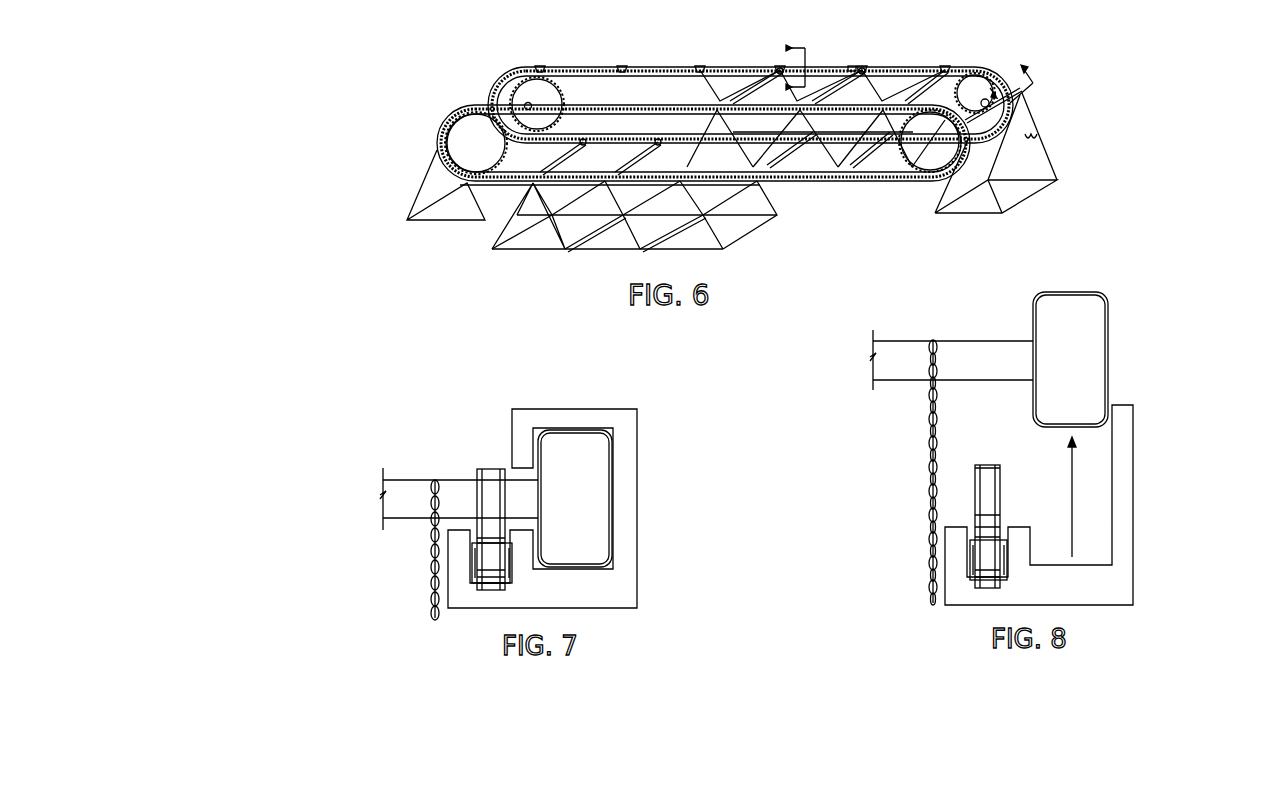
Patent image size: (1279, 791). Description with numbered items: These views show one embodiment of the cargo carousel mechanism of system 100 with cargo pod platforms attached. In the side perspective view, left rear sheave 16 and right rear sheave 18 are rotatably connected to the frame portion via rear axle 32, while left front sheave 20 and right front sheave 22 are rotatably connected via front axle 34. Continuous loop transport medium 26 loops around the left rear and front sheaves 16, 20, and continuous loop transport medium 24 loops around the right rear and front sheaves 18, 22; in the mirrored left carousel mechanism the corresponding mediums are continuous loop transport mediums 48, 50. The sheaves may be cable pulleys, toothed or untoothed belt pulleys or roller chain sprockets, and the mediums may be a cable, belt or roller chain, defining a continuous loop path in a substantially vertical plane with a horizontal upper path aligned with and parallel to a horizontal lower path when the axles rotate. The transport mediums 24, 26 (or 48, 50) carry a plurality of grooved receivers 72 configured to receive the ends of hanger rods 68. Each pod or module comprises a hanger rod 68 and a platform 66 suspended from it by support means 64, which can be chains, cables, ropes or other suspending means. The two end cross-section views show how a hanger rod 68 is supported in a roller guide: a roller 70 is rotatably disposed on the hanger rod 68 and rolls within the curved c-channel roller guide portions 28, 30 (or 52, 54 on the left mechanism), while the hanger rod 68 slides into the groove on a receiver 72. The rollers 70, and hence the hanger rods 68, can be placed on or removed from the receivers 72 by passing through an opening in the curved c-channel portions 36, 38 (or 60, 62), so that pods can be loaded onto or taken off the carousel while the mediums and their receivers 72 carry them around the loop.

In FIG. 6, the system 100 is at (590, 53).
In FIG. 6, the left rear sheave 16 is at (470, 124).
In FIG. 6, the right rear sheave 18 is at (532, 82).
In FIG. 6, the left front sheave 20 is at (927, 153).
In FIG. 6, the right front sheave 22 is at (978, 70).
In FIG. 6, the continuous loop transport medium 24 is at (648, 68).
In FIG. 7, the continuous loop transport medium 24 is at (567, 569).
In FIG. 8, the continuous loop transport medium 24 is at (1065, 566).
In FIG. 6, the continuous loop transport medium 26 is at (440, 140).
In FIG. 7, the continuous loop transport medium 26 is at (567, 569).
In FIG. 8, the continuous loop transport medium 26 is at (1065, 566).
In FIG. 7, the curved c-channel portion 28 is at (542, 493).
In FIG. 7, the curved c-channel portion 30 is at (542, 493).
In FIG. 6, the rear axle 32 is at (526, 103).
In FIG. 6, the front axle 34 is at (973, 83).
In FIG. 8, the curved c-channel portion 36 is at (1112, 505).
In FIG. 8, the curved c-channel portion 38 is at (1112, 505).
In FIG. 7, the continuous loop transport medium 48 is at (567, 569).
In FIG. 8, the continuous loop transport medium 48 is at (1065, 566).
In FIG. 7, the continuous loop transport medium 50 is at (492, 578).
In FIG. 8, the continuous loop transport medium 50 is at (990, 575).
In FIG. 7, the curved c-channel portion 52 is at (542, 493).
In FIG. 7, the curved c-channel portion 54 is at (585, 418).
In FIG. 8, the curved c-channel portion 60 is at (1112, 505).
In FIG. 8, the curved c-channel portion 62 is at (1125, 500).
In FIG. 6, the support means 64 is at (1037, 134).
In FIG. 7, the support means 64 is at (430, 540).
In FIG. 8, the support means 64 is at (932, 470).
In FIG. 6, the platform 66 is at (1020, 193).
In FIG. 6, the hanger rod 68 is at (908, 86).
In FIG. 7, the hanger rod 68 is at (455, 500).
In FIG. 8, the hanger rod 68 is at (997, 367).
In FIG. 6, the roller 70 is at (855, 68).
In FIG. 7, the roller 70 is at (590, 478).
In FIG. 8, the roller 70 is at (1083, 358).
In FIG. 6, the grooved receiver 72 is at (700, 68).
In FIG. 7, the grooved receiver 72 is at (492, 490).
In FIG. 8, the grooved receiver 72 is at (990, 495).